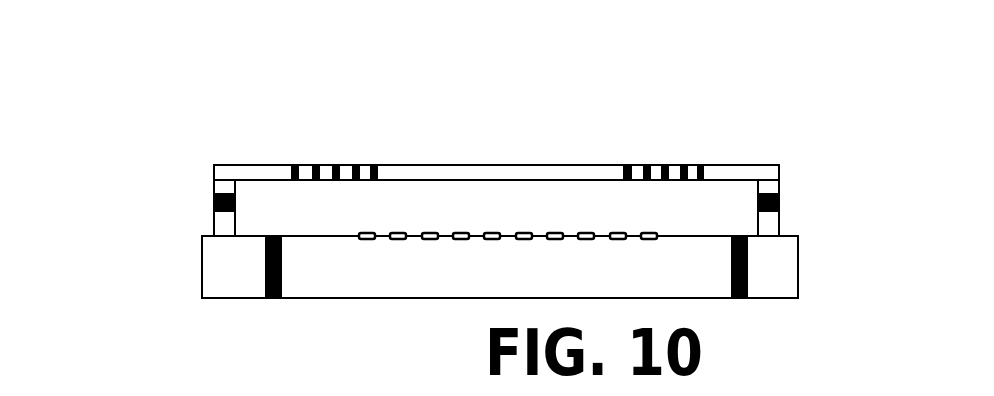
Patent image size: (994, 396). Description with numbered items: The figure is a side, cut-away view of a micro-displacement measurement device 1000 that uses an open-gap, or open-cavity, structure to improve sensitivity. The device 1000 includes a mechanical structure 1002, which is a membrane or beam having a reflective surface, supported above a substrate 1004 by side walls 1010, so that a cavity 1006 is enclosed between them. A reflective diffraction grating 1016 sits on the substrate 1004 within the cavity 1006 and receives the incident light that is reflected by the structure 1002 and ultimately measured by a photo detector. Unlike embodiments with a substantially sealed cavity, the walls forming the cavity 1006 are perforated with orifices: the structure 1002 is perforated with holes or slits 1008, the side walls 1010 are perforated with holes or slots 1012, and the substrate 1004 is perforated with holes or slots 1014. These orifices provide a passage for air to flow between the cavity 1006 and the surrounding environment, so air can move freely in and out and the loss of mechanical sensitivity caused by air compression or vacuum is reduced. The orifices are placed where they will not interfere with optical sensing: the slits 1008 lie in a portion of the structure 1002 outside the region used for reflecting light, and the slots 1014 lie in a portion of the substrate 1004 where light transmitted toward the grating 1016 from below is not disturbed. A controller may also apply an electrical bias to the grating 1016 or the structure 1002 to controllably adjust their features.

The device 1000 is at (161, 88).
The mechanical structure 1002 is at (471, 164).
The substrate 1004 is at (393, 281).
The cavity 1006 is at (521, 220).
The holes or slits 1008 is at (312, 147).
The side walls 1010 is at (214, 188).
The holes or slots 1012 is at (214, 200).
The holes or slots 1014 is at (274, 299).
The reflective diffraction grating 1016 is at (610, 222).